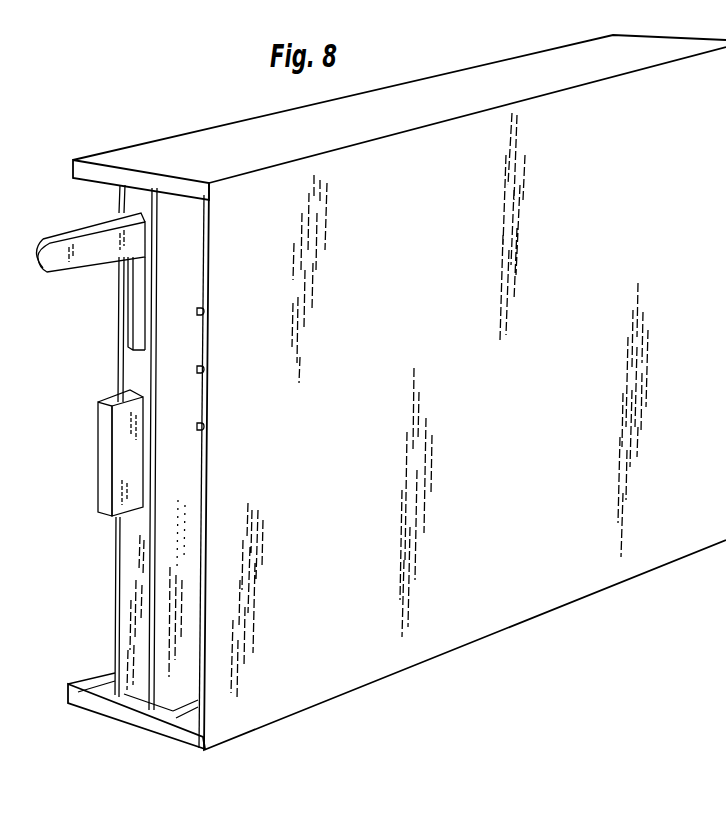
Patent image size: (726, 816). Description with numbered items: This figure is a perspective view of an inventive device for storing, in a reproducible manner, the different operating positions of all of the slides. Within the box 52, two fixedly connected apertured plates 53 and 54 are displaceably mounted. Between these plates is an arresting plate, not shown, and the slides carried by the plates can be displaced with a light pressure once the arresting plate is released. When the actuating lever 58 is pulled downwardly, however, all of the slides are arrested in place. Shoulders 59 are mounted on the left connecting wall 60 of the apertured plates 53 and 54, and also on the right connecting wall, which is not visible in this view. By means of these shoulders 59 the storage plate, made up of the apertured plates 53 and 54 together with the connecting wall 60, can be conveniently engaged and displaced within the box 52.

The box 52 is at (432, 93).
The apertured plate 53 is at (118, 365).
The apertured plate 54 is at (172, 690).
The actuating lever 58 is at (72, 262).
The shoulder 59 is at (122, 446).
The left connecting wall 60 is at (137, 587).